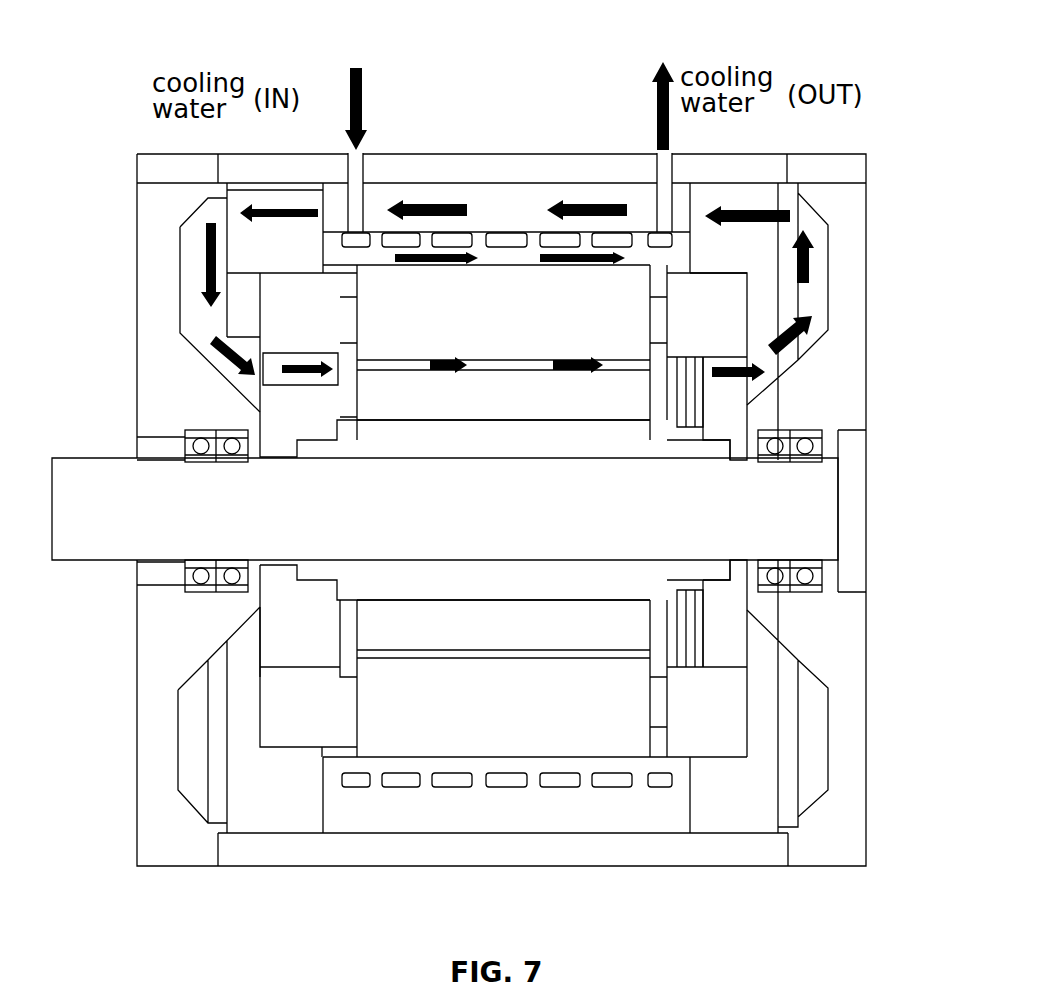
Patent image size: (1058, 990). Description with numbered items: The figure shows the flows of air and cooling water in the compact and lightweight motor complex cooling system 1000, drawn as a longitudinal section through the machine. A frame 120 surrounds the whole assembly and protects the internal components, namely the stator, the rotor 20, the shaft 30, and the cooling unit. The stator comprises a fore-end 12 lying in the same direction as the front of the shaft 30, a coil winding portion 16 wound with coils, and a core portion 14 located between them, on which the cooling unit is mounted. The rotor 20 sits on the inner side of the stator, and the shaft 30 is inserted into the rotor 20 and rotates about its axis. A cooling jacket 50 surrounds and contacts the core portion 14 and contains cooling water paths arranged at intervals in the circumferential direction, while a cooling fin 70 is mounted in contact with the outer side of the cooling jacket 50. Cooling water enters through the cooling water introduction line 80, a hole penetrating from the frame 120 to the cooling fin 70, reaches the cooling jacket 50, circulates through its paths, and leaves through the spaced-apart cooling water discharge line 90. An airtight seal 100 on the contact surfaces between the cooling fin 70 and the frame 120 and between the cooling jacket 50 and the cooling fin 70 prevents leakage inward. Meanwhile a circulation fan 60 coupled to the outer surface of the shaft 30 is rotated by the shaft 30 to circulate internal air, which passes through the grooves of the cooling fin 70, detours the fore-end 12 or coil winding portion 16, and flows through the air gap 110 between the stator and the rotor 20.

The compact and lightweight motor complex cooling system 1000 is at (105, 31).
The fore-end 12 is at (723, 330).
The core portion 14 is at (383, 312).
The coil winding portion 16 is at (293, 320).
The rotor 20 is at (380, 400).
The shaft 30 is at (780, 505).
The cooling jacket 50 is at (695, 255).
The circulation fan 60 is at (752, 416).
The cooling fin 70 is at (798, 205).
The cooling water introduction line 80 is at (345, 180).
The cooling water discharge line 90 is at (674, 165).
The airtight seal 100 is at (401, 178).
The air gap 110 is at (258, 409).
The frame 120 is at (748, 172).